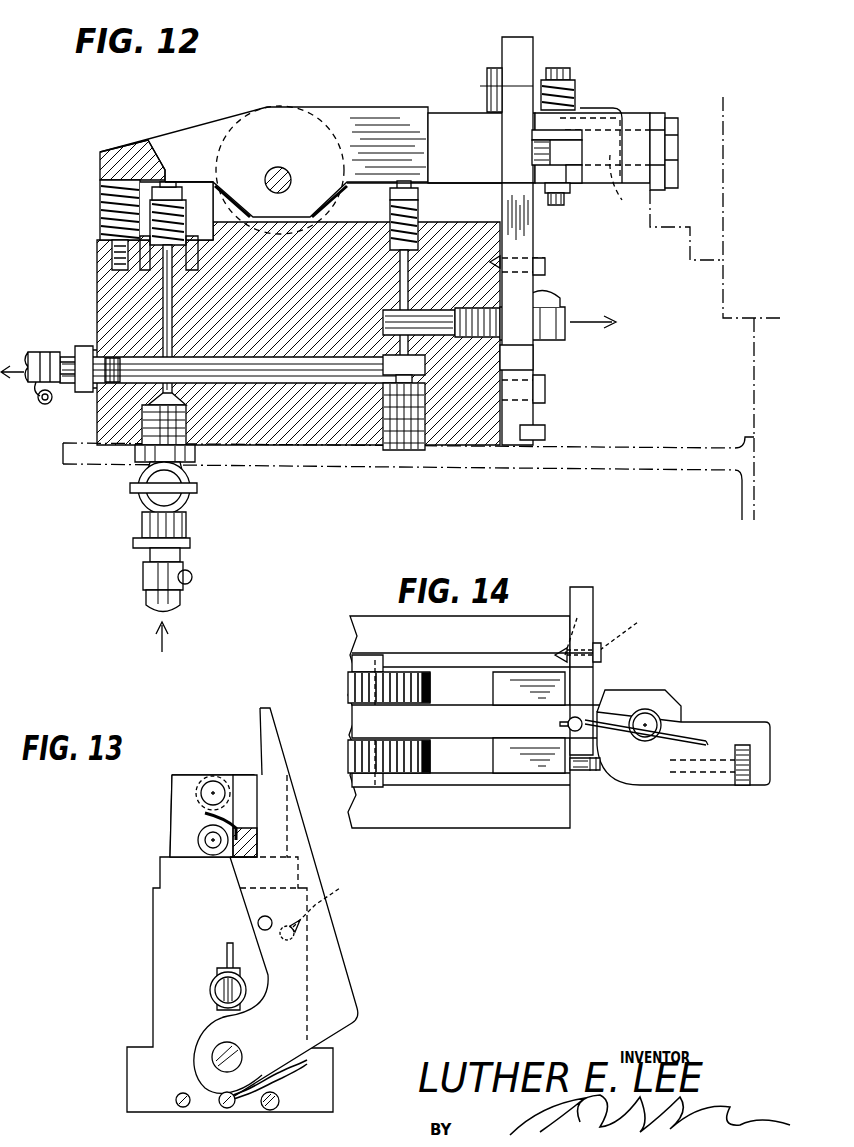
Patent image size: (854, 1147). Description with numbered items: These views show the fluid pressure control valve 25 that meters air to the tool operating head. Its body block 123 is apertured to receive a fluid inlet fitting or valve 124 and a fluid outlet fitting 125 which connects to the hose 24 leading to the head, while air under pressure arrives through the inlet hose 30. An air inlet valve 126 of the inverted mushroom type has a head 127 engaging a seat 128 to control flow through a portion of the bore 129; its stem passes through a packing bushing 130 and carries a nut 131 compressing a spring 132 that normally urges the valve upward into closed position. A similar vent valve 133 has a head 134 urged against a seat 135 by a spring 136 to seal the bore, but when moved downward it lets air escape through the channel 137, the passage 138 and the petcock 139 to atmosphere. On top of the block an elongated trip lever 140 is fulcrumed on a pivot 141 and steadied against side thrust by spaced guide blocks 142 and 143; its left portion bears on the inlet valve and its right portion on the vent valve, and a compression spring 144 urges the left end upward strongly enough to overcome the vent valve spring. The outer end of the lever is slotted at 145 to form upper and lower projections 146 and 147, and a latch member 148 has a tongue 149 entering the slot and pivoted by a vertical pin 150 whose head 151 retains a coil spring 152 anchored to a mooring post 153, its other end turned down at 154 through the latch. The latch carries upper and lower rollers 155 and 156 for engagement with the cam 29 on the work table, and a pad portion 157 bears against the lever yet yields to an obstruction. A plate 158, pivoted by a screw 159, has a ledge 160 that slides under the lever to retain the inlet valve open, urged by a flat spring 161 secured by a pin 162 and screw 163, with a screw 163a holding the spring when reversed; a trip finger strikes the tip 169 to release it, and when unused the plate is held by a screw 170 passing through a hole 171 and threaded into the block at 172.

In FIG. 12, the hose 24 is at (36, 386).
In FIG. 12, the fluid pressure control valve 25 is at (84, 298).
In FIG. 14, the fluid pressure control valve 25 is at (546, 834).
In FIG. 13, the fluid pressure control valve 25 is at (142, 921).
In FIG. 12, the cam 29 is at (680, 218).
In FIG. 12, the inlet hose 30 is at (182, 598).
In FIG. 12, the body block 123 is at (280, 438).
In FIG. 12, the fluid inlet fitting 124 is at (140, 481).
In FIG. 12, the fluid outlet fitting 125 is at (83, 392).
In FIG. 12, the air inlet valve 126 is at (175, 320).
In FIG. 12, the head 127 is at (180, 398).
In FIG. 12, the seat 128 is at (142, 408).
In FIG. 12, the bore 129 is at (285, 378).
In FIG. 12, the packing bushing 130 is at (182, 232).
In FIG. 12, the nut 131 is at (170, 186).
In FIG. 12, the spring 132 is at (190, 205).
In FIG. 12, the vent valve 133 is at (398, 300).
In FIG. 12, the head 134 is at (405, 415).
In FIG. 12, the seat 135 is at (426, 366).
In FIG. 12, the spring 136 is at (420, 213).
In FIG. 12, the channel 137 is at (390, 331).
In FIG. 12, the passage 138 is at (455, 308).
In FIG. 12, the petcock 139 is at (560, 308).
In FIG. 13, the petcock 139 is at (213, 978).
In FIG. 12, the trip lever 140 is at (325, 118).
In FIG. 14, the trip lever 140 is at (425, 730).
In FIG. 12, the pivot 141 is at (290, 172).
In FIG. 14, the pivot 141 is at (350, 721).
In FIG. 12, the guide block 142 is at (448, 112).
In FIG. 14, the guide block 142 is at (553, 682).
In FIG. 13, the guide block 142 is at (250, 772).
In FIG. 14, the guide block 143 is at (530, 751).
In FIG. 13, the guide block 143 is at (195, 777).
In FIG. 12, the compression spring 144 is at (104, 194).
In FIG. 12, the slot 145 is at (565, 128).
In FIG. 12, the upper projection 146 is at (568, 120).
In FIG. 12, the lower projection 147 is at (568, 186).
In FIG. 12, the latch member 148 is at (634, 145).
In FIG. 14, the latch member 148 is at (680, 786).
In FIG. 12, the tongue 149 is at (534, 138).
In FIG. 14, the tongue 149 is at (622, 766).
In FIG. 12, the pin 150 is at (556, 205).
In FIG. 12, the head 151 is at (560, 66).
In FIG. 14, the head 151 is at (642, 712).
In FIG. 12, the coil spring 152 is at (568, 100).
In FIG. 14, the coil spring 152 is at (685, 726).
In FIG. 12, the mooring post 153 is at (488, 75).
In FIG. 14, the mooring post 153 is at (566, 723).
In FIG. 12, the downturned spring end 154 is at (615, 197).
In FIG. 12, the upper roller 155 is at (670, 115).
In FIG. 14, the upper roller 155 is at (744, 786).
In FIG. 13, the upper roller 155 is at (197, 793).
In FIG. 12, the lower roller 156 is at (675, 172).
In FIG. 13, the lower roller 156 is at (197, 840).
In FIG. 12, the pad portion 157 is at (548, 178).
In FIG. 14, the pad portion 157 is at (625, 690).
In FIG. 12, the plate 158 is at (520, 242).
In FIG. 14, the plate 158 is at (592, 603).
In FIG. 13, the plate 158 is at (325, 944).
In FIG. 12, the screw 159 is at (546, 386).
In FIG. 13, the screw 159 is at (238, 1048).
In FIG. 13, the ledge 160 is at (238, 845).
In FIG. 12, the flat spring 161 is at (547, 433).
In FIG. 13, the flat spring 161 is at (282, 1078).
In FIG. 13, the pin 162 is at (226, 1108).
In FIG. 14, the screw 163 is at (578, 771).
In FIG. 13, the screw 163 is at (272, 1110).
In FIG. 13, the screw 163a is at (186, 1108).
In FIG. 12, the tip 169 is at (528, 48).
In FIG. 13, the tip 169 is at (268, 718).
In FIG. 12, the screw 170 is at (547, 270).
In FIG. 14, the screw 170 is at (603, 649).
In FIG. 14, the hole 171 is at (638, 628).
In FIG. 13, the hole 171 is at (258, 921).
In FIG. 14, the threaded hole 172 is at (562, 631).
In FIG. 13, the threaded hole 172 is at (329, 909).